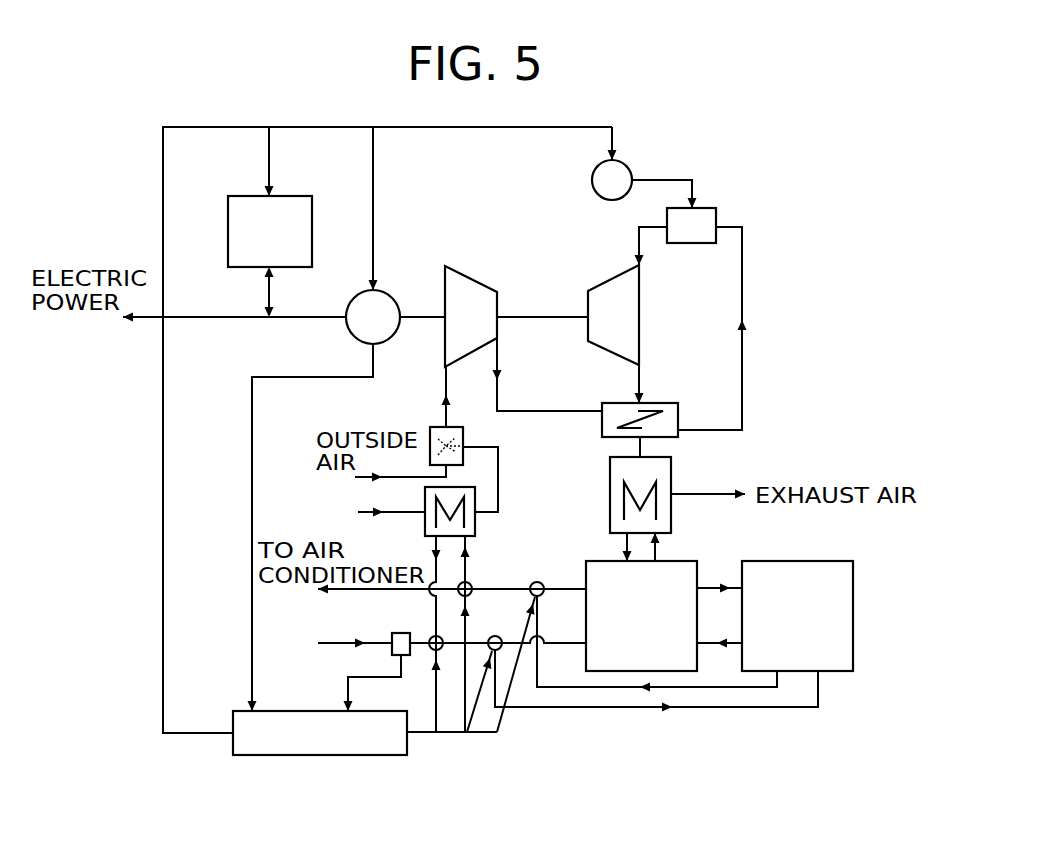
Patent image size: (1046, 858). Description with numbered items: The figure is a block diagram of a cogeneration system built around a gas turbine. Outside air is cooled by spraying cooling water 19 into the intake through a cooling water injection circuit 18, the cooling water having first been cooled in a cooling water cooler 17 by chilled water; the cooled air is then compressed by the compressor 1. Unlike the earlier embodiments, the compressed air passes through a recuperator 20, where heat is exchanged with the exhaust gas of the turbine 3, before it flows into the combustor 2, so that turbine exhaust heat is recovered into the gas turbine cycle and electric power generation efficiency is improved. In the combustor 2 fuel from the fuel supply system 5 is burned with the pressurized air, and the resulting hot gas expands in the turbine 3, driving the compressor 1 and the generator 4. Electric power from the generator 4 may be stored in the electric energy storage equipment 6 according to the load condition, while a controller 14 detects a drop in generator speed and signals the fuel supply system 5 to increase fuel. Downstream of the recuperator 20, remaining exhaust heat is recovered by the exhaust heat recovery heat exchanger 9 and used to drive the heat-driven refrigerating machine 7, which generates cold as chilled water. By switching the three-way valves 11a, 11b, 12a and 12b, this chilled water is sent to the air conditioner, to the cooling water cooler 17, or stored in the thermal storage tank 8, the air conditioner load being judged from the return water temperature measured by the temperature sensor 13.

The compressor 1 is at (470, 355).
The combustor 2 is at (706, 208).
The turbine 3 is at (641, 286).
The generator 4 is at (352, 336).
The fuel supply system 5 is at (622, 163).
The electric energy storage equipment 6 is at (292, 196).
The heat-driven refrigerating machine 7 is at (685, 561).
The thermal storage tank 8 is at (801, 561).
The exhaust heat recovery heat exchanger 9 is at (672, 465).
The three-way valve 11a is at (433, 650).
The three-way valve 11b is at (470, 583).
The three-way valve 12a is at (497, 636).
The three-way valve 12b is at (540, 582).
The temperature sensor 13 is at (392, 648).
The controller 14 is at (233, 722).
The cooling water cooler 17 is at (477, 529).
The cooling water injection circuit 18 is at (499, 462).
The cooling water 19 is at (400, 511).
The recuperator 20 is at (670, 403).